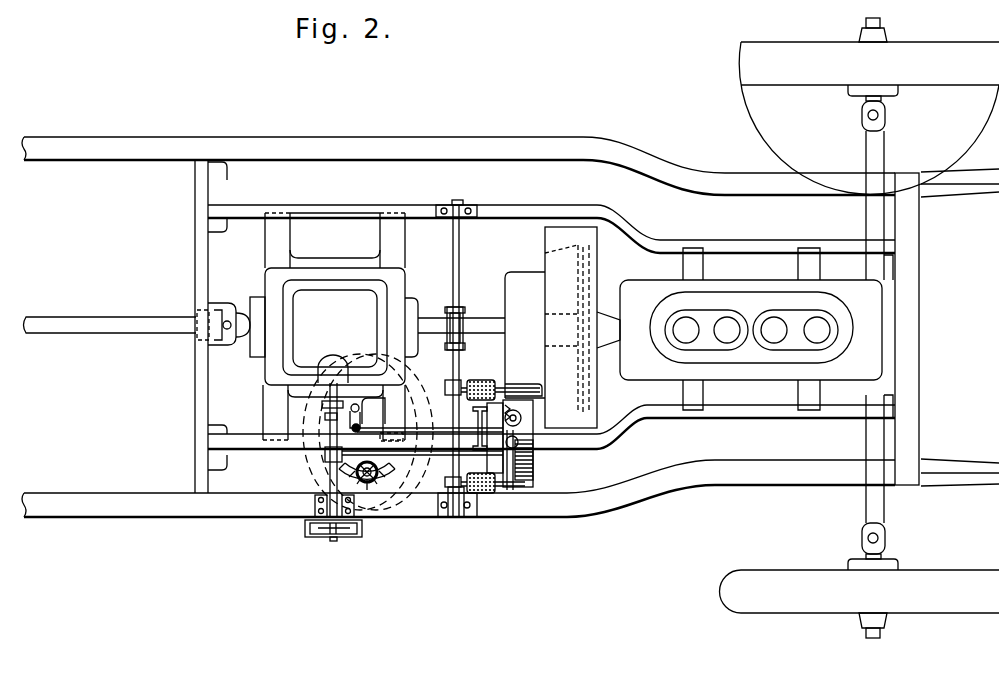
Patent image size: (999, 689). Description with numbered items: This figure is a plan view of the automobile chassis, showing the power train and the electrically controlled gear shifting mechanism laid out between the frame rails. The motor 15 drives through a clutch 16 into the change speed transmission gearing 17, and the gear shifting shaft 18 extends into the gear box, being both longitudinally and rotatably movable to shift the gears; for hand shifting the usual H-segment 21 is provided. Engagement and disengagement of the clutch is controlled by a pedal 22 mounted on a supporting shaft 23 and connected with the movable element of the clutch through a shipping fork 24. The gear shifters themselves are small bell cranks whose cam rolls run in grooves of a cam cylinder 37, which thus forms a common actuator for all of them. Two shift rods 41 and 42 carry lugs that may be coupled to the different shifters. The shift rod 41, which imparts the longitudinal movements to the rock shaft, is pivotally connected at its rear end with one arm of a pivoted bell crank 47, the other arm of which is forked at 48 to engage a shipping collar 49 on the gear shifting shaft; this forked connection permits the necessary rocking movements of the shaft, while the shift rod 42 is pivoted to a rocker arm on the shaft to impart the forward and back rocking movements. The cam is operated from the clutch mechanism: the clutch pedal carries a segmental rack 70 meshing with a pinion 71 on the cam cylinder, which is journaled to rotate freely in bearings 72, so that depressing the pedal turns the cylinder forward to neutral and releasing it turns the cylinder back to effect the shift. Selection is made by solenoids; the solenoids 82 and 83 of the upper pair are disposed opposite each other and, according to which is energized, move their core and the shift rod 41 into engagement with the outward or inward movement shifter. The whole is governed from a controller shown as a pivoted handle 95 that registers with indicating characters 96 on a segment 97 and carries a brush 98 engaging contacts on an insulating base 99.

The motor 15 is at (748, 353).
The clutch 16 is at (522, 278).
The change speed transmission gearing 17 is at (356, 326).
The gear shifting shaft 18 is at (330, 477).
The H-segment 21 is at (316, 537).
The pedal 22 is at (481, 381).
The supporting shaft 23 is at (455, 288).
The shipping fork 24 is at (457, 311).
The cam cylinder 37 is at (530, 438).
The shift rod 41 is at (433, 431).
The shift rod 42 is at (438, 457).
The bell crank 47 is at (357, 430).
The forked arm 48 is at (345, 392).
The shipping collar 49 is at (330, 406).
The segmental rack 70 is at (517, 384).
The pinion 71 is at (542, 397).
The bearings 72 is at (513, 452).
The solenoid 82 is at (495, 457).
The solenoid 83 is at (498, 402).
The pivoted handle 95 is at (379, 487).
The indicating characters 96 is at (382, 490).
The segment 97 is at (392, 488).
The brush 98 is at (350, 476).
The insulating base 99 is at (360, 463).